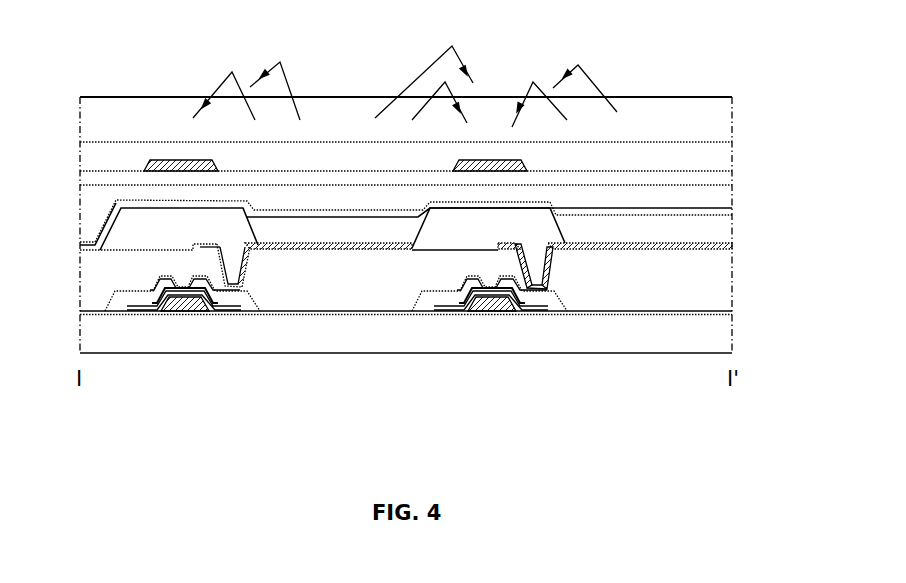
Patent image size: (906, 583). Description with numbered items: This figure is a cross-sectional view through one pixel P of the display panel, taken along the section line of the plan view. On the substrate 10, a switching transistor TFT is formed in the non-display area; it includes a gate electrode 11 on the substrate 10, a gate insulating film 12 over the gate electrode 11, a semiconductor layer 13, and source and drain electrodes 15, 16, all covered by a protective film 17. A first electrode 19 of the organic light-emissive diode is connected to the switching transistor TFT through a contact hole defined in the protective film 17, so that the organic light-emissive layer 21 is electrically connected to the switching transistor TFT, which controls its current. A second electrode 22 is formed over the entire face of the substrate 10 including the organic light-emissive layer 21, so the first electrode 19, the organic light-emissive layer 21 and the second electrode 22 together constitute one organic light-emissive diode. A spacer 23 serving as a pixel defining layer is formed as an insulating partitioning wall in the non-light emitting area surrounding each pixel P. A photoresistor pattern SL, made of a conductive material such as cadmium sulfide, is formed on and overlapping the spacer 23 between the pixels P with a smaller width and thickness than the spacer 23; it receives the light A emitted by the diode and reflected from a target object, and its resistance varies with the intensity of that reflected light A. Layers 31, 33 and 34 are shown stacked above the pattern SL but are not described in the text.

The substrate 10 is at (720, 337).
The gate electrode 11 is at (493, 306).
The gate insulating film 12 is at (722, 311).
The semiconductor layer 13 is at (452, 308).
The source electrode 15 is at (423, 310).
The drain electrode 16 is at (530, 298).
The protective film 17 is at (720, 278).
The first electrode 19 is at (634, 250).
The organic light-emissive layer 21 is at (325, 236).
The second electrode 22 is at (722, 212).
The spacer 23 is at (138, 236).
The first layer 31 is at (722, 179).
The second layer 33 is at (722, 154).
The cover layer 34 is at (722, 120).
The photoresistor pattern SL is at (140, 163).
The switching transistor TFT is at (488, 373).
The light A is at (428, 70).
The pixel P is at (692, 34).